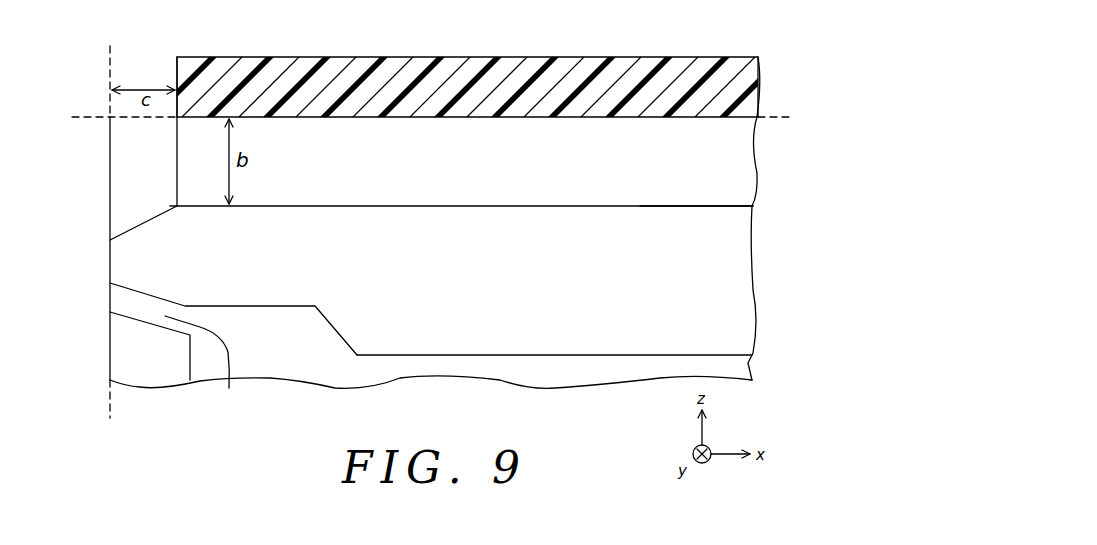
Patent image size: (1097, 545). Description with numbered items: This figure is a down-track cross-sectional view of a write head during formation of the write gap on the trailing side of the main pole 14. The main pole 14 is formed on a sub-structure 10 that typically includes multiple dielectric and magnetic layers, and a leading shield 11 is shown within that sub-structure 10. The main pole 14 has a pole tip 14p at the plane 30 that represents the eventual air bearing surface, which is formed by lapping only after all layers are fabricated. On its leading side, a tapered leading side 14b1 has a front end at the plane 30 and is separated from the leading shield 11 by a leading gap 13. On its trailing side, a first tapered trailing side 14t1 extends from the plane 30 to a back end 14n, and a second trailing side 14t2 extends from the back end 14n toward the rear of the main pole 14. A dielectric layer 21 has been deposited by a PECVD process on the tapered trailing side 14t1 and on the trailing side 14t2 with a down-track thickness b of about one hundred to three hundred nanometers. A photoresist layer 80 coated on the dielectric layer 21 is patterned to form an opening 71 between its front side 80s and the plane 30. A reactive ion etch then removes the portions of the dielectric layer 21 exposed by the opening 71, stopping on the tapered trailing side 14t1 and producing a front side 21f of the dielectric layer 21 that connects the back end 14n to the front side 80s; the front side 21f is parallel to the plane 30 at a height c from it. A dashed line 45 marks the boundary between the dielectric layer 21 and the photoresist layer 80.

The sub-structure 10 is at (347, 370).
The leading shield 11 is at (125, 365).
The leading gap 13 is at (207, 364).
The main pole 14 is at (738, 288).
The back end of the tapered trailing side 14n is at (177, 206).
The first tapered trailing side 14t1 is at (128, 232).
The second trailing side 14t2 is at (713, 206).
The pole tip 14p is at (110, 262).
The tapered leading side 14b1 is at (140, 293).
The dielectric layer 21 is at (737, 155).
The front side of the dielectric layer 21f is at (177, 161).
The ABS plane 30 is at (110, 233).
The boundary plane 45 is at (433, 118).
The opening 71 is at (145, 67).
The photoresist layer 80 is at (745, 83).
The front side of the photoresist layer 80s is at (176, 58).